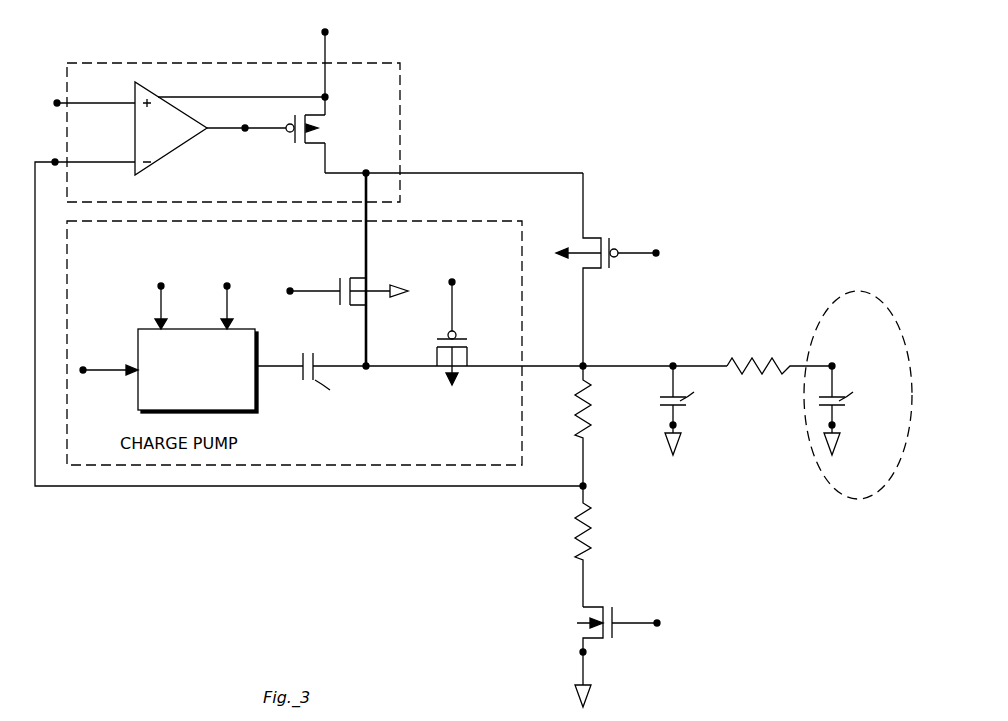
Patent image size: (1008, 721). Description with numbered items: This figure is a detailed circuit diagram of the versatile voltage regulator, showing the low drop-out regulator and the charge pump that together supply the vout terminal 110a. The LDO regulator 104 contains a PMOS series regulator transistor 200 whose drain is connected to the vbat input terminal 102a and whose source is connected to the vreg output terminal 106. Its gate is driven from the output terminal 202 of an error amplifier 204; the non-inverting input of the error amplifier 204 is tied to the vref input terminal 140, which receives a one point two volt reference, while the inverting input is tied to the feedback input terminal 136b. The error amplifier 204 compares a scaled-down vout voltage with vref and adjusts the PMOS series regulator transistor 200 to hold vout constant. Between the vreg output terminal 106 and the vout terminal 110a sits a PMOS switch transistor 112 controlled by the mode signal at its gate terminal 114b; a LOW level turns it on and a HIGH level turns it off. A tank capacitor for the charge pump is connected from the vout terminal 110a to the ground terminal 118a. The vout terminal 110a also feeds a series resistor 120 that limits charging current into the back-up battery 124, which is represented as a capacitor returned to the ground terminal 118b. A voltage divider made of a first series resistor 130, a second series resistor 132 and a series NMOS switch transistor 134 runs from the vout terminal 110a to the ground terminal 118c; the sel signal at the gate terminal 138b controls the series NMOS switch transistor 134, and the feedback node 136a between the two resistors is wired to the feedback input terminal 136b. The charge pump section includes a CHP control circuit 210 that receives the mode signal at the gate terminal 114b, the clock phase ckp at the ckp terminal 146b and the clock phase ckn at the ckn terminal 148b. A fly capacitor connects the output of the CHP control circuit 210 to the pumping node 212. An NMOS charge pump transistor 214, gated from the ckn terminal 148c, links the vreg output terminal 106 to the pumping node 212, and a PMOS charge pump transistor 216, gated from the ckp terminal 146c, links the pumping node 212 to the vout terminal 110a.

The vbat input terminal 102a is at (322, 30).
The LDO regulator 104 is at (375, 63).
The vreg output terminal 106 is at (368, 170).
The vout output terminal 110a is at (588, 363).
The PMOS switch transistor 112 is at (595, 237).
The gate terminal 114b is at (84, 373).
The ground terminal 118a is at (678, 428).
The ground terminal 118b is at (837, 428).
The ground terminal 118c is at (580, 650).
The series resistor 120 is at (758, 346).
The back-up battery 124 is at (805, 421).
The first series resistor 130 is at (588, 430).
The second series resistor 132 is at (577, 538).
The series NMOS switch transistor 134 is at (595, 605).
The feedback node 136a is at (590, 488).
The feedback input terminal 136b is at (55, 160).
The gate terminal 138b is at (659, 620).
The vref input terminal 140 is at (57, 100).
The ckp terminal 146b is at (230, 290).
The ckp terminal 146c is at (455, 285).
The ckn terminal 148b is at (158, 291).
The ckn terminal 148c is at (292, 295).
The PMOS series regulator transistor 200 is at (306, 138).
The output terminal 202 is at (248, 132).
The error amplifier 204 is at (170, 86).
The CHP control circuit 210 is at (260, 364).
The pumping node 212 is at (368, 370).
The NMOS charge pump transistor 214 is at (362, 284).
The PMOS charge pump transistor 216 is at (470, 343).